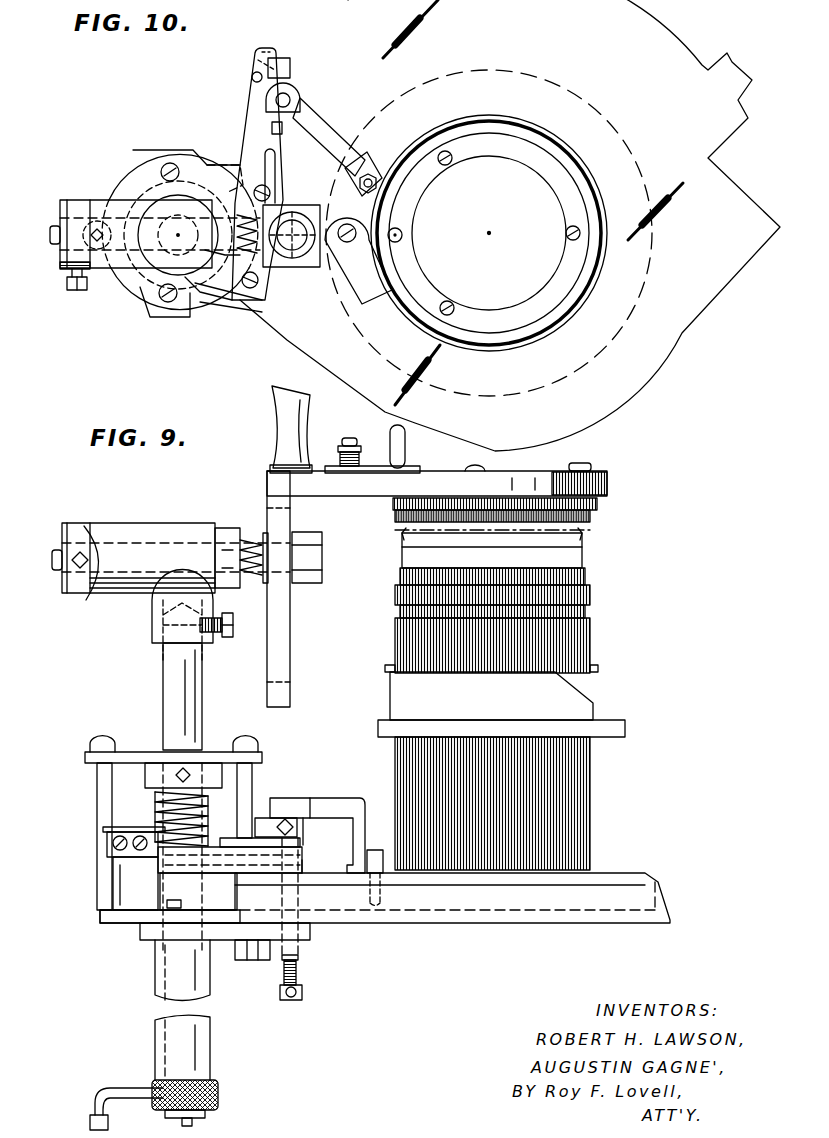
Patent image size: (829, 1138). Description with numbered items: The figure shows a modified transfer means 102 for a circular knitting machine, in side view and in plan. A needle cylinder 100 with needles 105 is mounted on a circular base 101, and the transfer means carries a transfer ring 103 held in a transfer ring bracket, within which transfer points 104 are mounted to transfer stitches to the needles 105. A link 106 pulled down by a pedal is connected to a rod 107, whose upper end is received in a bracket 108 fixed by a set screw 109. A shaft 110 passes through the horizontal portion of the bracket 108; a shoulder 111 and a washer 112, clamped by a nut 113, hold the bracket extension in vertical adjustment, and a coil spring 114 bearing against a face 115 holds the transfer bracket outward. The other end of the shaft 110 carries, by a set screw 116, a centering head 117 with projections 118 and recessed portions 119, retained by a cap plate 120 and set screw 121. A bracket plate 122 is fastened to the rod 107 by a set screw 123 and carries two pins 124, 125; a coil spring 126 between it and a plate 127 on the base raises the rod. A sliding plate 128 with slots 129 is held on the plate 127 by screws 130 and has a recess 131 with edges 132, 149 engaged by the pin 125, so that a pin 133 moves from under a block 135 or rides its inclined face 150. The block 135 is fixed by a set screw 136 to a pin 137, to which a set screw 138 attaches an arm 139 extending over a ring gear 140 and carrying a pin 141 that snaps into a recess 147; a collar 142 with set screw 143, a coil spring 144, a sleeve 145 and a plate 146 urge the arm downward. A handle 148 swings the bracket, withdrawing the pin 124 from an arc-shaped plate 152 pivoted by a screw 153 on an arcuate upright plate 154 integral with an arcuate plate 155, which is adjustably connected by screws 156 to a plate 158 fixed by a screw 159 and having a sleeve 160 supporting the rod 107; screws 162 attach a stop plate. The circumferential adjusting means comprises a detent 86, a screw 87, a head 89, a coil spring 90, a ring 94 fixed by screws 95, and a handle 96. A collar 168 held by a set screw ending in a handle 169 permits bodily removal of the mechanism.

In FIG. 10, the detent 86 is at (381, 300).
In FIG. 9, the detent 86 is at (406, 441).
In FIG. 9, the screw 87 is at (348, 440).
In FIG. 9, the head 89 is at (352, 455).
In FIG. 9, the coil spring 90 is at (353, 463).
In FIG. 10, the ring 94 is at (489, 233).
In FIG. 9, the ring 94 is at (497, 454).
In FIG. 10, the screws 95 is at (574, 241).
In FIG. 9, the screws 95 is at (584, 464).
In FIG. 10, the handle 96 is at (395, 242).
In FIG. 9, the needle cylinder 100 is at (592, 775).
In FIG. 10, the circular base 101 is at (716, 282).
In FIG. 9, the circular base 101 is at (480, 923).
In FIG. 9, the transfer means 102 is at (257, 480).
In FIG. 9, the transfer ring 103 is at (592, 500).
In FIG. 9, the transfer points 104 is at (590, 522).
In FIG. 9, the needles 105 is at (586, 553).
In FIG. 9, the link 106 is at (192, 1122).
In FIG. 9, the rod 107 is at (202, 692).
In FIG. 9, the bracket 108 is at (150, 634).
In FIG. 9, the set screw 109 is at (228, 633).
In FIG. 9, the shaft 110 is at (162, 550).
In FIG. 9, the shoulder 111 is at (256, 540).
In FIG. 9, the washer 112 is at (296, 534).
In FIG. 9, the nut 113 is at (322, 574).
In FIG. 9, the coil spring 114 is at (262, 580).
In FIG. 9, the face 115 is at (232, 528).
In FIG. 9, the set screw 116 is at (72, 565).
In FIG. 10, the centering head 117 is at (80, 193).
In FIG. 9, the centering head 117 is at (70, 523).
In FIG. 10, the projections 118 is at (92, 292).
In FIG. 9, the projections 118 is at (90, 557).
In FIG. 10, the recessed portions 119 is at (85, 238).
In FIG. 9, the recessed portions 119 is at (80, 593).
In FIG. 9, the cap plate 120 is at (55, 550).
In FIG. 9, the set screw 121 is at (51, 558).
In FIG. 9, the bracket plate 122 is at (146, 752).
In FIG. 9, the set screw 123 is at (183, 853).
In FIG. 10, the pin 124 is at (55, 218).
In FIG. 9, the pin 124 is at (97, 780).
In FIG. 9, the pin 125 is at (252, 780).
In FIG. 9, the coil spring 126 is at (156, 800).
In FIG. 10, the plate 127 is at (230, 190).
In FIG. 9, the plate 127 is at (205, 857).
In FIG. 10, the plate 128 is at (243, 158).
In FIG. 9, the plate 128 is at (237, 840).
In FIG. 10, the slots 129 is at (277, 165).
In FIG. 10, the screws 130 is at (271, 193).
In FIG. 10, the recess 131 is at (218, 284).
In FIG. 10, the edge 132 is at (160, 231).
In FIG. 10, the pin 133 is at (276, 50).
In FIG. 9, the pin 133 is at (240, 825).
In FIG. 9, the block 135 is at (297, 838).
In FIG. 10, the set screw 136 is at (283, 130).
In FIG. 9, the set screw 136 is at (294, 828).
In FIG. 10, the pin 137 is at (292, 99).
In FIG. 9, the pin 137 is at (288, 798).
In FIG. 10, the set screw 138 is at (252, 77).
In FIG. 10, the arm 139 is at (318, 122).
In FIG. 9, the arm 139 is at (356, 798).
In FIG. 10, the ring gear 140 is at (488, 70).
In FIG. 9, the ring gear 140 is at (572, 925).
In FIG. 9, the pin 141 is at (383, 887).
In FIG. 9, the collar 142 is at (302, 994).
In FIG. 9, the set screw 143 is at (294, 1001).
In FIG. 9, the coil spring 144 is at (298, 975).
In FIG. 9, the sleeve 145 is at (300, 952).
In FIG. 9, the plate 146 is at (303, 872).
In FIG. 9, the recess 147 is at (381, 905).
In FIG. 10, the handle 148 is at (319, 220).
In FIG. 9, the handle 148 is at (272, 395).
In FIG. 10, the edge 149 is at (213, 252).
In FIG. 10, the inclined face 150 is at (291, 62).
In FIG. 10, the arc-shaped plate 152 is at (160, 172).
In FIG. 9, the arc-shaped plate 152 is at (103, 828).
In FIG. 9, the screw 153 is at (115, 829).
In FIG. 10, the arcuate upright plate 154 is at (162, 318).
In FIG. 9, the arcuate upright plate 154 is at (113, 879).
In FIG. 10, the arcuate plate 155 is at (178, 318).
In FIG. 9, the arcuate plate 155 is at (100, 918).
In FIG. 9, the screws 156 is at (176, 900).
In FIG. 9, the plate 158 is at (140, 935).
In FIG. 9, the screw 159 is at (250, 962).
In FIG. 9, the sleeve 160 is at (155, 972).
In FIG. 9, the screws 162 is at (130, 855).
In FIG. 9, the collar 168 is at (218, 1092).
In FIG. 9, the handle 169 is at (96, 1090).